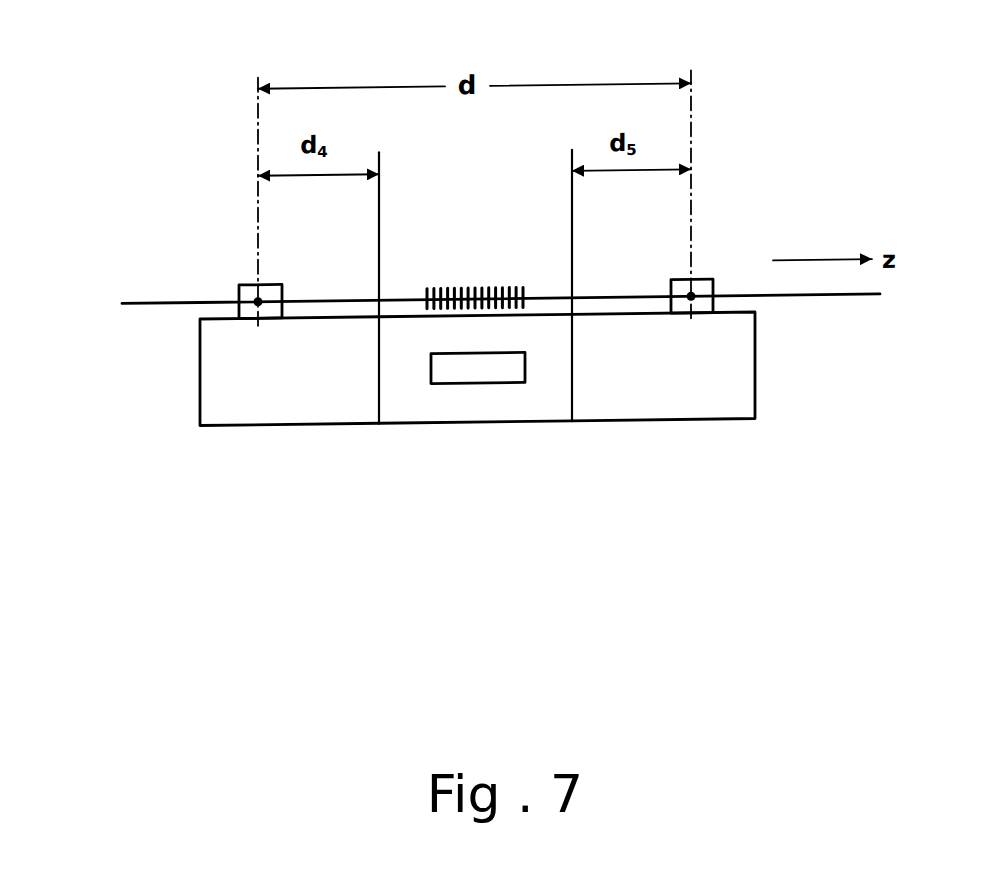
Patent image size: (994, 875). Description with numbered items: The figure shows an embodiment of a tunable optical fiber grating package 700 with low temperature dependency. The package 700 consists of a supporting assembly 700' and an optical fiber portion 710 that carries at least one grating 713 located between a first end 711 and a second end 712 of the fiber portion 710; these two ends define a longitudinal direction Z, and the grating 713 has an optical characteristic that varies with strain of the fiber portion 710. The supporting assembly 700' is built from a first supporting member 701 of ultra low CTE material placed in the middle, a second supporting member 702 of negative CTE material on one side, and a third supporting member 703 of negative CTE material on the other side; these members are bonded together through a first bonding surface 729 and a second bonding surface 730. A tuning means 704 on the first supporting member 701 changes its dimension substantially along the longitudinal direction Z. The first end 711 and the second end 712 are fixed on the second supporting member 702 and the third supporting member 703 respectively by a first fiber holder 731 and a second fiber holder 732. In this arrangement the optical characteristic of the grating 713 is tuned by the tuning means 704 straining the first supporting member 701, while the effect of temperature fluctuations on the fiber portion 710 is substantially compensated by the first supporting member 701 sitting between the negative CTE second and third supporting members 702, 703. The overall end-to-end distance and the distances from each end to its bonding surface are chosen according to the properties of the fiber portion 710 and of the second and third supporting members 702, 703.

The tunable optical fiber grating package 700 is at (122, 163).
The supporting assembly 700' is at (823, 364).
The first supporting member 701 is at (449, 400).
The second supporting member 702 is at (262, 377).
The third supporting member 703 is at (652, 399).
The tuning means 704 is at (500, 372).
The optical fiber portion 710 is at (600, 298).
The first end 711 is at (257, 294).
The second end 712 is at (693, 295).
The grating 713 is at (420, 279).
The first bonding surface 729 is at (379, 332).
The second bonding surface 730 is at (573, 379).
The first fiber holder 731 is at (239, 289).
The second fiber holder 732 is at (715, 286).